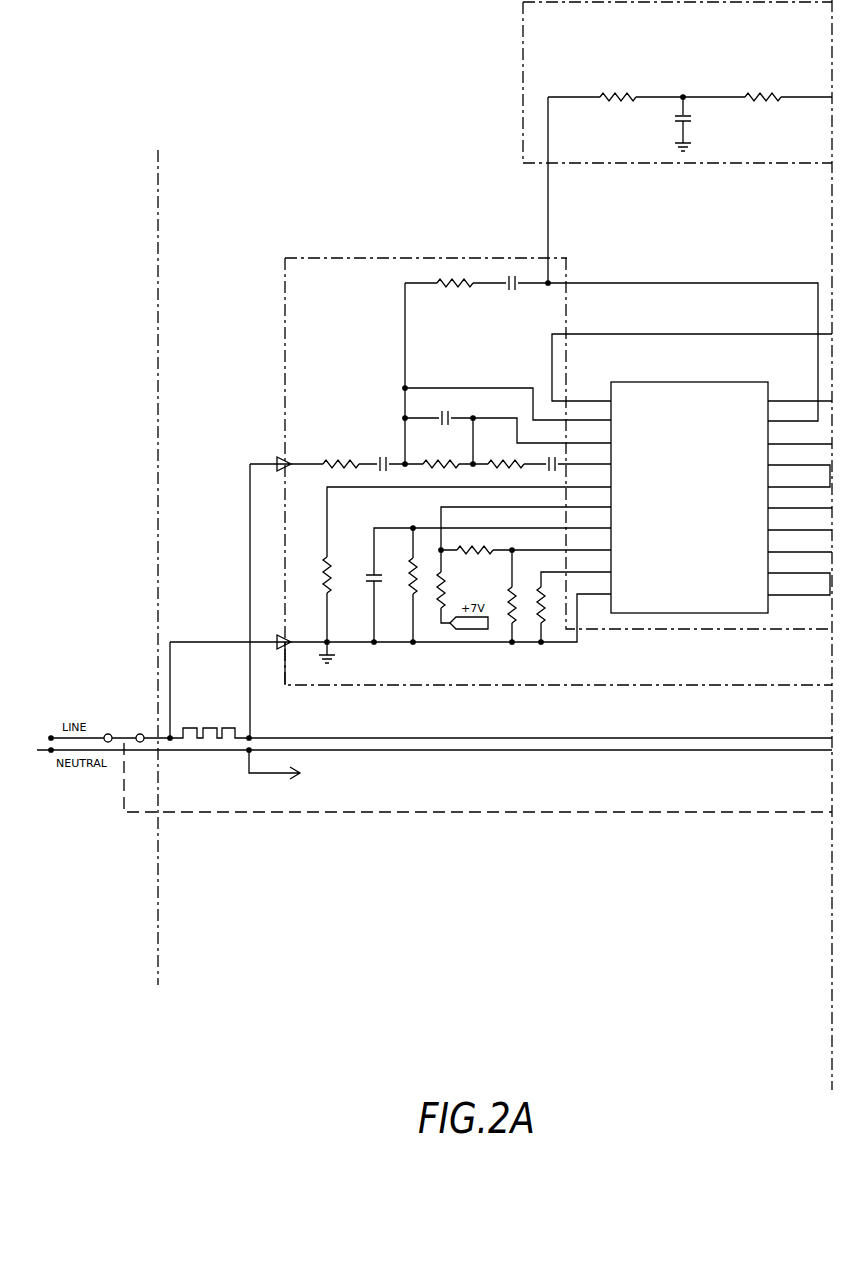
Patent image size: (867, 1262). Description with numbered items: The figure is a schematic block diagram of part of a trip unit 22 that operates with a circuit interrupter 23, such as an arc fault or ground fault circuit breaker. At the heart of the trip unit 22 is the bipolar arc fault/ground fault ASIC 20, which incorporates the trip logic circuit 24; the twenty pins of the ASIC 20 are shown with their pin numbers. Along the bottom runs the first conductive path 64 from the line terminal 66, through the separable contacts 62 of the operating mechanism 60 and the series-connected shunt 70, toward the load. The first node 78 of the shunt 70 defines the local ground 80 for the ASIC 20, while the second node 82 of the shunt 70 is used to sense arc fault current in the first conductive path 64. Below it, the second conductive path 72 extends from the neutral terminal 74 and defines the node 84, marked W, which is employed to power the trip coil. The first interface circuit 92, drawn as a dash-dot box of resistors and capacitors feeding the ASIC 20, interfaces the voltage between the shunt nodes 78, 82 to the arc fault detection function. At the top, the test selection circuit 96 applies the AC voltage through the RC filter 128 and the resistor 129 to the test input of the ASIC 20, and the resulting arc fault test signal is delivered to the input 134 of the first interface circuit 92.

The bipolar arc fault/ground fault ASIC 20 is at (658, 629).
The trip unit 22 is at (692, 866).
The circuit interrupter 23 is at (92, 845).
The trip logic circuit 24 is at (695, 425).
The operating mechanism 60 is at (110, 695).
The separable contacts 62 is at (104, 702).
The first conductive path 64 is at (412, 737).
The line terminal 66 is at (51, 736).
The shunt 70 is at (212, 725).
The second conductive path 72 is at (451, 752).
The neutral terminal 74 is at (51, 753).
The first node 78 is at (172, 735).
The local ground 80 is at (342, 657).
The second node 82 is at (252, 736).
The node 84 is at (247, 753).
The first interface circuit 92 is at (391, 258).
The test selection circuit 96 is at (523, 19).
The RC filter 128 is at (690, 139).
The resistor 129 is at (609, 97).
The input 134 is at (547, 290).